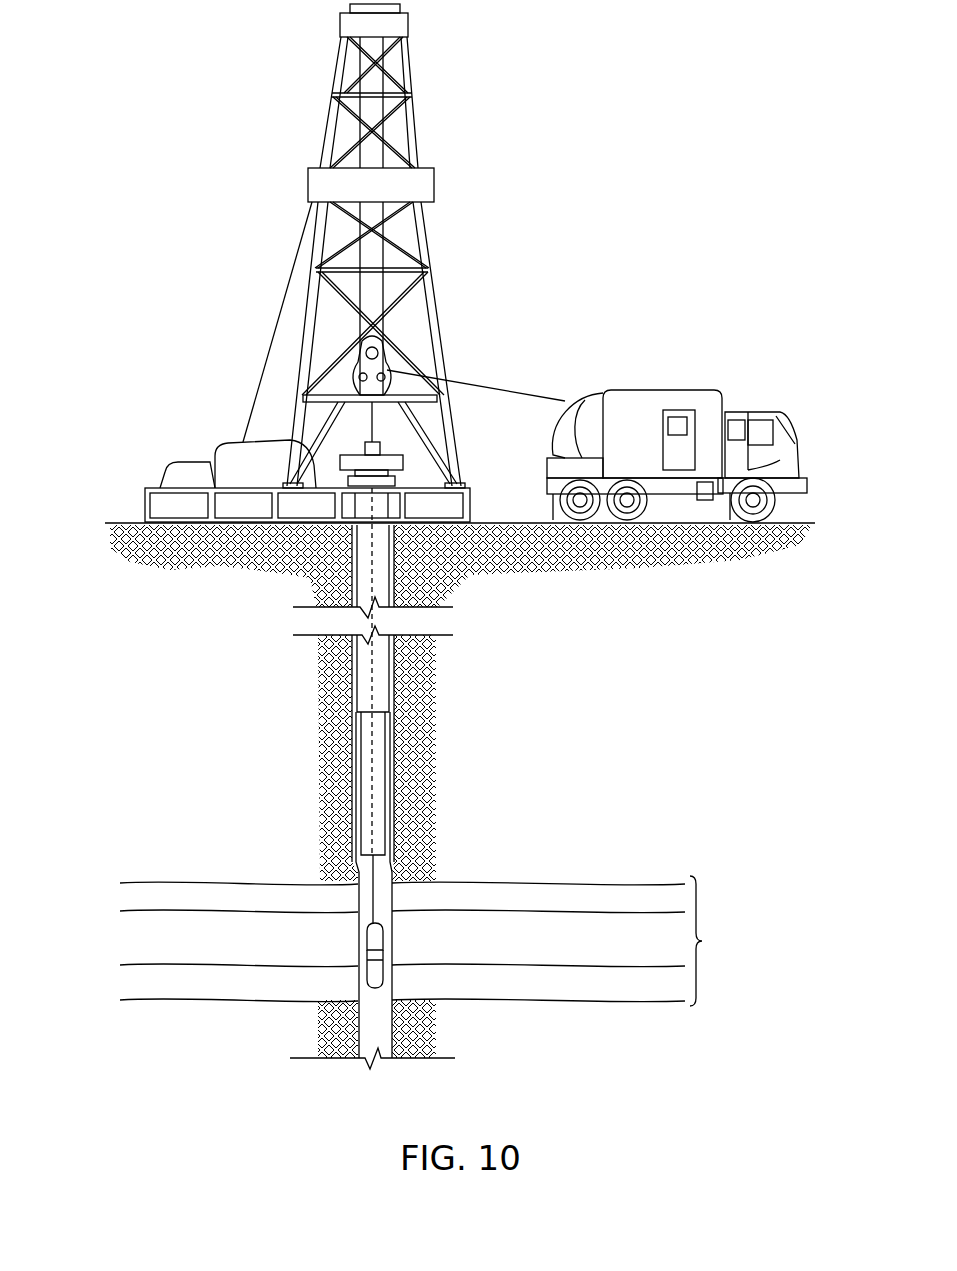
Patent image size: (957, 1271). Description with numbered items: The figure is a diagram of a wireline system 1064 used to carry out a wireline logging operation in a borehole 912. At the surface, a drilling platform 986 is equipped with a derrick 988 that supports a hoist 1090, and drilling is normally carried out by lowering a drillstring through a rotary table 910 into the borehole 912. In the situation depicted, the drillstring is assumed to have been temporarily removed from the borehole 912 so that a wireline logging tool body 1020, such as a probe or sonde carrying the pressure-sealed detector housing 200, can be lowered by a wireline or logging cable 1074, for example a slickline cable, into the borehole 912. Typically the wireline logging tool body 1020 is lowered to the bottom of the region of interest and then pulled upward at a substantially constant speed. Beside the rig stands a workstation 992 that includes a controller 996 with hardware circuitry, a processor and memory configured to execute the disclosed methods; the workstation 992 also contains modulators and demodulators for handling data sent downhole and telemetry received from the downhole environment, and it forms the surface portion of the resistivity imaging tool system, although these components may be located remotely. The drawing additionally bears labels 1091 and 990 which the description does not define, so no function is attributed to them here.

The wireline system 1064 is at (620, 187).
The hoist 1090 is at (387, 353).
The drill line 1091 is at (365, 443).
The rotary table 910 is at (403, 454).
The derrick 988 is at (456, 483).
The drilling platform 986 is at (469, 515).
The wireline or logging cable 1074 is at (487, 385).
The workstation 992 is at (696, 408).
The controller 996 is at (678, 415).
The borehole 912 is at (357, 890).
The wireline logging tool body 1020 is at (382, 932).
The pressure-sealed detector housing 200 is at (374, 952).
The formation 990 is at (439, 941).